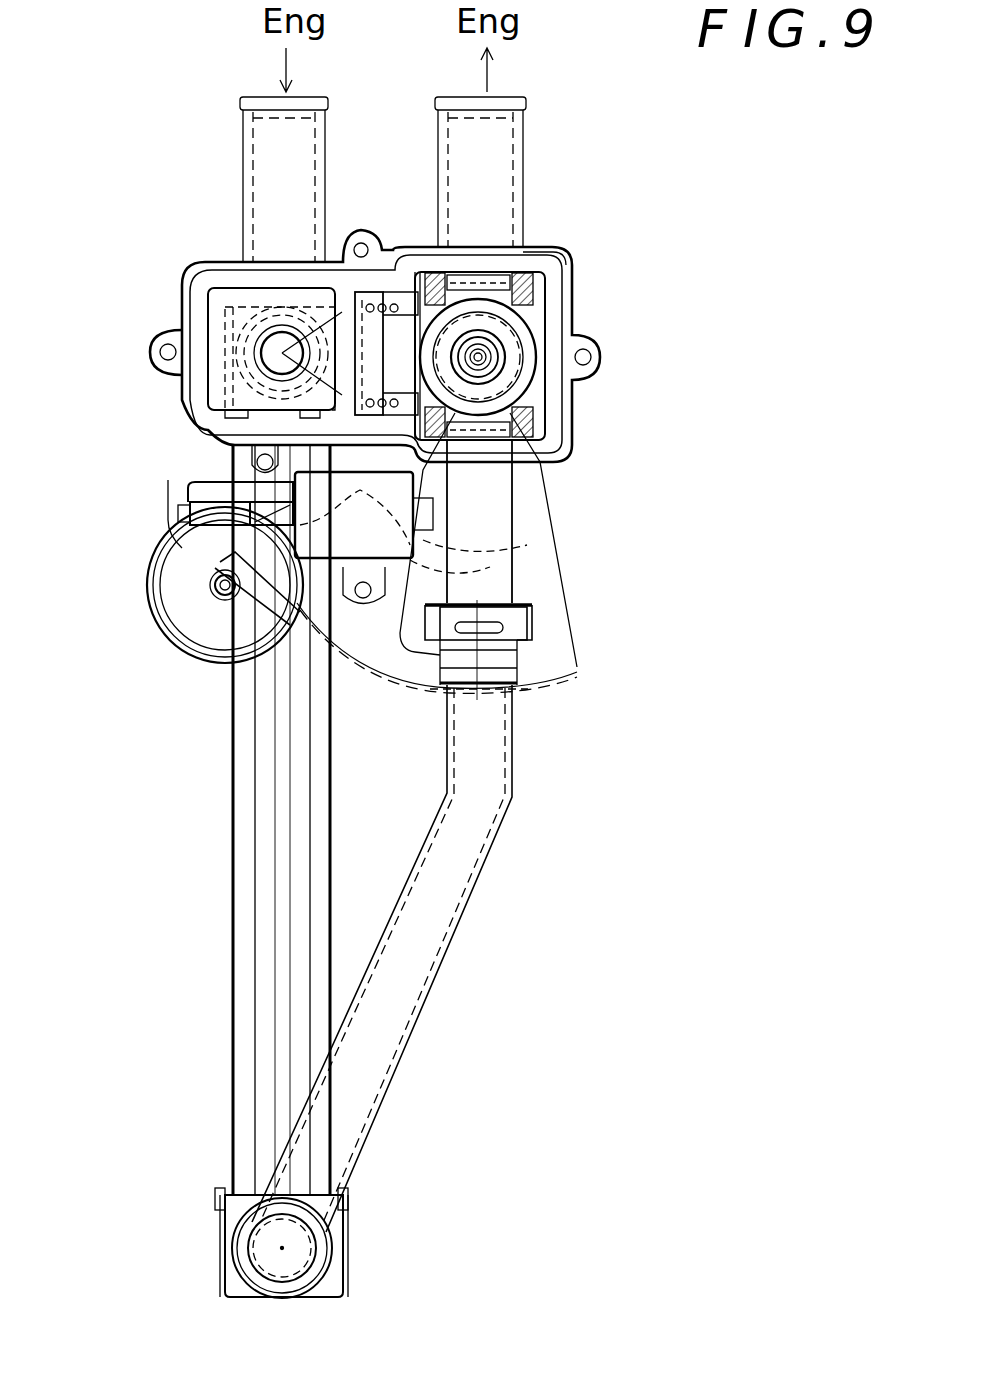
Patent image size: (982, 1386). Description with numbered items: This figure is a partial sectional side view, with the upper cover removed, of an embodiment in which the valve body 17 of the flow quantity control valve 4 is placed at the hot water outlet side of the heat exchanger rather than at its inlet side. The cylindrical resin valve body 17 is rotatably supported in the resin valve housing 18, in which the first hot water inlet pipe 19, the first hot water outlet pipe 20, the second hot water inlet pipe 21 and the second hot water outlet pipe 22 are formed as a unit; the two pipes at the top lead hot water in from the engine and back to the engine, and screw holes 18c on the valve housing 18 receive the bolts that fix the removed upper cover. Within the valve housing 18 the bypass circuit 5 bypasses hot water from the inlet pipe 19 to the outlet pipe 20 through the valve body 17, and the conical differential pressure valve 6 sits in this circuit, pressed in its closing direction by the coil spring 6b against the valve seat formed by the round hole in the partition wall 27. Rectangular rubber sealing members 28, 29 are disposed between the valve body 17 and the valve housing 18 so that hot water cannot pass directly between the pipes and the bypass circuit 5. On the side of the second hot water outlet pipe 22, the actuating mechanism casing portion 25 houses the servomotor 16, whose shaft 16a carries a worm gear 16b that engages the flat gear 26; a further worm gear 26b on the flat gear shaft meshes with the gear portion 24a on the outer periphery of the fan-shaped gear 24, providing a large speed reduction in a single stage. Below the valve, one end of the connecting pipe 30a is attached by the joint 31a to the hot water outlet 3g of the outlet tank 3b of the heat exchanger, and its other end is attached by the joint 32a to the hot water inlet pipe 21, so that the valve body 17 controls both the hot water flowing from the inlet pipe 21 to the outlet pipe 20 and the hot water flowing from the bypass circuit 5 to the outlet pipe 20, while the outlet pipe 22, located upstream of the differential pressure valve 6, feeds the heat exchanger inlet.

The outlet tank 3b is at (343, 1237).
The hot water outlet 3g is at (297, 1260).
The flow quantity control valve 4 is at (597, 278).
The bypass circuit 5 is at (400, 335).
The differential pressure valve 6 is at (338, 290).
The coil spring 6b is at (365, 292).
The servomotor 16 is at (455, 488).
The shaft 16a is at (209, 509).
The worm gear 16b is at (240, 478).
The valve body 17 is at (527, 332).
The valve housing 18 is at (185, 392).
The screw holes 18c is at (165, 340).
The first hot water inlet pipe 19 is at (270, 140).
The first hot water outlet pipe 20 is at (498, 140).
The second hot water inlet pipe 21 is at (490, 512).
The second hot water outlet pipe 22 is at (255, 272).
The fan-shaped gear 24 is at (595, 668).
The gear portion 24a is at (360, 673).
The actuating mechanism casing portion 25 is at (146, 605).
The flat gear 26 is at (188, 611).
The worm gear 26b is at (215, 601).
The partition wall 27 is at (308, 300).
The sealing member 28 is at (533, 403).
The sealing member 29 is at (528, 250).
The connecting pipe 30a is at (407, 967).
The joint 31a is at (230, 1250).
The joint 32a is at (497, 633).